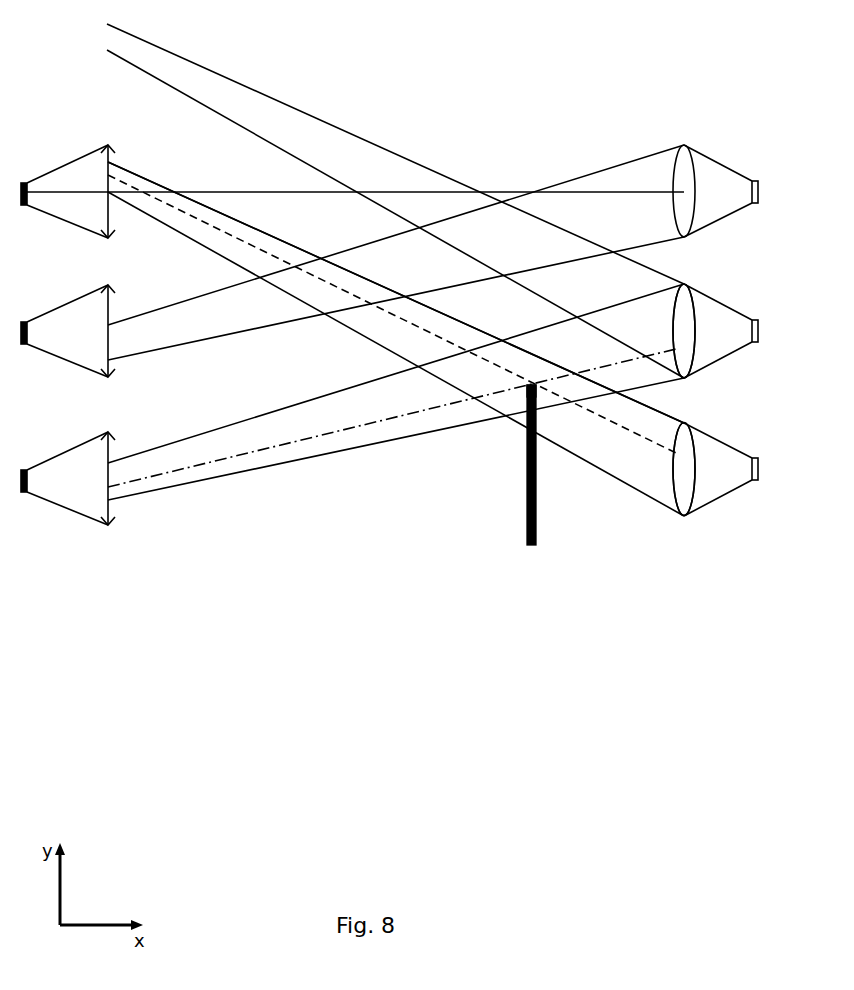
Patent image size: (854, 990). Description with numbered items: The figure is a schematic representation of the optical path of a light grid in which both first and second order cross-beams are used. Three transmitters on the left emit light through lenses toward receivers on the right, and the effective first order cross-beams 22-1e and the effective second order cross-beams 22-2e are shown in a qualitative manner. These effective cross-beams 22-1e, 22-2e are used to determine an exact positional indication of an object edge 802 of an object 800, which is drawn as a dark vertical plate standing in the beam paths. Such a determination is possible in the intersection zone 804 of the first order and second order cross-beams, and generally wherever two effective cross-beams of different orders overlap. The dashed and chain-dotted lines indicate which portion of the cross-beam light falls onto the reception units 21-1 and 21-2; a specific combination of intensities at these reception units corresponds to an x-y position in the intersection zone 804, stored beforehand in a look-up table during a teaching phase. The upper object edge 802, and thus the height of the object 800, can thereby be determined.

The reception unit 21-1 is at (722, 325).
The reception unit 21-2 is at (722, 452).
The effective first order cross-beam 22-1e is at (245, 316).
The effective second order cross-beam 22-2e is at (633, 472).
The object 800 is at (527, 528).
The object edge 802 is at (528, 387).
The intersection zone 804 is at (462, 373).